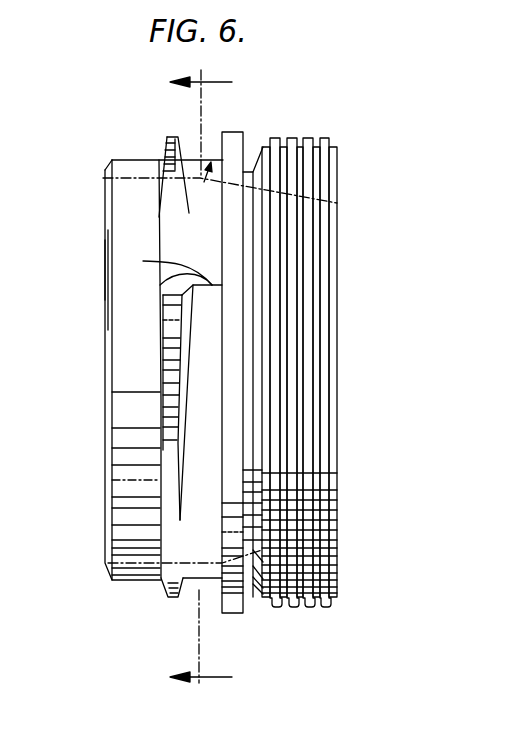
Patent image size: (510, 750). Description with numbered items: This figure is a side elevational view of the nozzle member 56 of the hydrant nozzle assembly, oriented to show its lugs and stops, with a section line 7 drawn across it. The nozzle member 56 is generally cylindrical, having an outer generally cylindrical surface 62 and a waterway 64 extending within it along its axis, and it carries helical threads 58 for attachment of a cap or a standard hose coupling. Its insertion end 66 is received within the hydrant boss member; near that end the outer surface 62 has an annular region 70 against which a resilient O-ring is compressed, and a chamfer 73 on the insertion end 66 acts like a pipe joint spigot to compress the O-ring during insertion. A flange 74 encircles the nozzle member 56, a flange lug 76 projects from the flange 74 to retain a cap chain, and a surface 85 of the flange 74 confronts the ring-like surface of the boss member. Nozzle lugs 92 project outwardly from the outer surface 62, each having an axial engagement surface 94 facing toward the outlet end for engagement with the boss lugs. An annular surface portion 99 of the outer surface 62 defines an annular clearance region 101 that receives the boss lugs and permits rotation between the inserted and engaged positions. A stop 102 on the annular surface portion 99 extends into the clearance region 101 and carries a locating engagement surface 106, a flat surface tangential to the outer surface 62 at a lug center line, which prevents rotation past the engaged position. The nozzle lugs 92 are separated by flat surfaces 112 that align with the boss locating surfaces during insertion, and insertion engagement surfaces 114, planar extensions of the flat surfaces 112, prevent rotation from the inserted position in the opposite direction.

The section line 7- 7 is at (201, 376).
The nozzle member 56 is at (317, 345).
The helical threads 58 is at (328, 140).
The outer generally cylindrical surface 62 is at (140, 158).
The waterway 64 is at (318, 200).
The insertion end 66 is at (105, 312).
The annular region 70 is at (122, 162).
The chamfer 73 is at (112, 267).
The flange 74 is at (237, 133).
The flange lug 76 is at (227, 612).
The flange surface 85 is at (222, 145).
The nozzle lugs 92 is at (163, 160).
The axial engagement surface 94 is at (189, 155).
The annular surface portion 99 is at (210, 251).
The annular clearance region 101 is at (199, 195).
The stop 102 is at (160, 285).
The locating engagement surface 106 is at (204, 320).
The flat surfaces 112 is at (170, 219).
The insertion engagement surfaces 114 is at (163, 266).